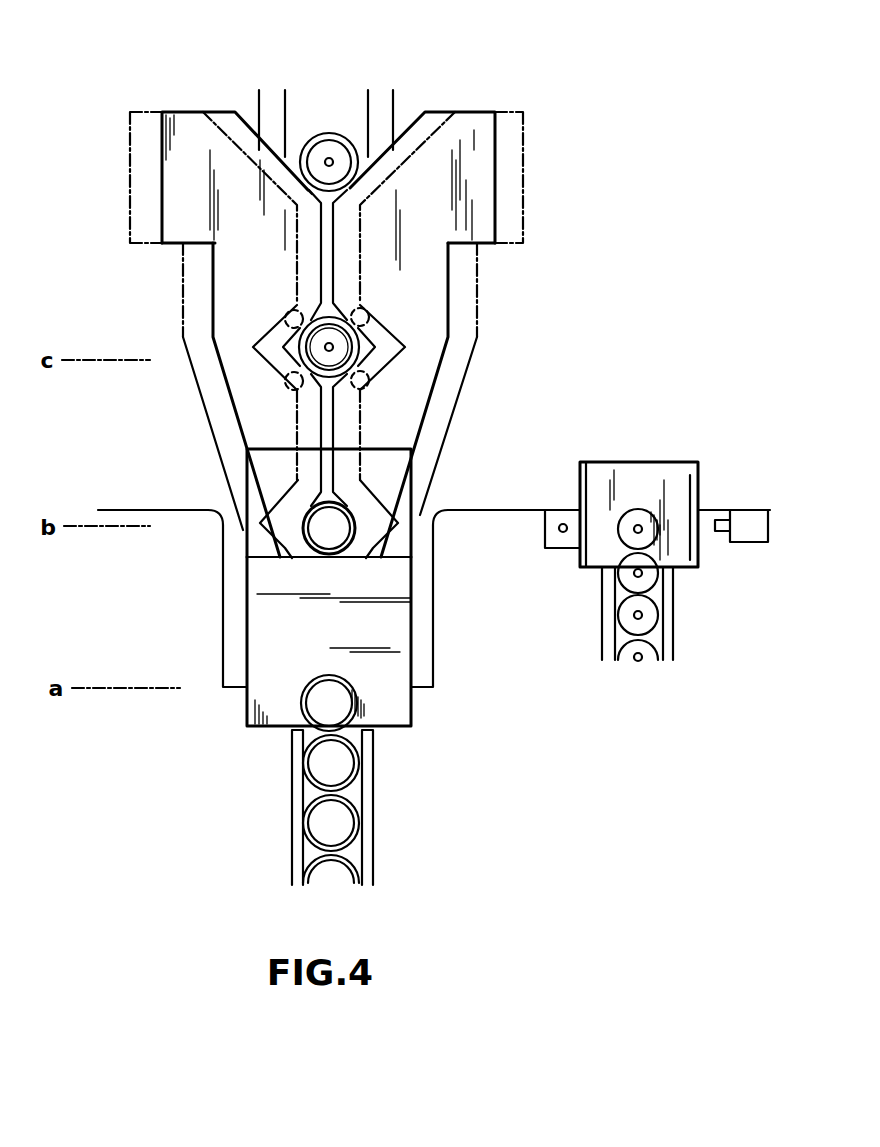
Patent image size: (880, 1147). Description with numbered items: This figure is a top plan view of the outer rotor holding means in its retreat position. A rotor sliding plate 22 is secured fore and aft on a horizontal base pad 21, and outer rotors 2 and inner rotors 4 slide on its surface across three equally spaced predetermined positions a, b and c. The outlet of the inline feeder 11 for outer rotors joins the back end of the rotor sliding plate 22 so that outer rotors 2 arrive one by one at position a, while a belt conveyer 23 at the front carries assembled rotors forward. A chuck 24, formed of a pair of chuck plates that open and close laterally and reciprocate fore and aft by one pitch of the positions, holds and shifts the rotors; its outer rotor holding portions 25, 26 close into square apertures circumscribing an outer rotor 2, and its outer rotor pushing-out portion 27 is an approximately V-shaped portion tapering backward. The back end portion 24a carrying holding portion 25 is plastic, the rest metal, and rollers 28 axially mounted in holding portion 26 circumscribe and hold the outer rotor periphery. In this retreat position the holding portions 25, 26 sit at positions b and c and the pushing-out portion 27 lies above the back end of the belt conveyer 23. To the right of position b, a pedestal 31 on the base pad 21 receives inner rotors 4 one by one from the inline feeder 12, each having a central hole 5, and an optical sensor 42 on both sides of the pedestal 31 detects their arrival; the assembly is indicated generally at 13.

The outer rotor 2 is at (312, 133).
The inner rotor 4 is at (340, 153).
The central hole 5 is at (334, 348).
The inline feeder 11 is at (292, 830).
The inline feeder 12 is at (675, 650).
The guide device 13 is at (452, 724).
The base pad 21 is at (180, 488).
The rotor sliding plate 22 is at (267, 693).
The belt conveyer 23 is at (345, 115).
The chuck 24 is at (127, 193).
The back end portion 24a is at (390, 462).
The outer rotor holding portion 25 is at (290, 525).
The outer rotor holding portion 26 is at (305, 333).
The outer rotor pushing-out portion 27 is at (310, 190).
The rollers 28 is at (368, 318).
The pedestal 31 is at (620, 487).
The optical sensor 42 is at (560, 533).